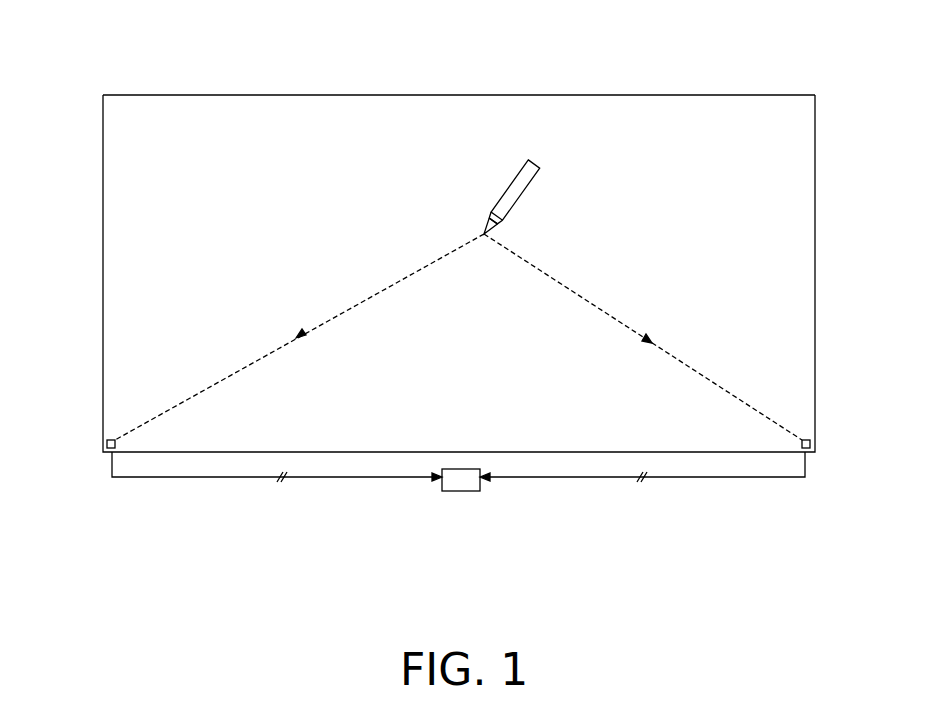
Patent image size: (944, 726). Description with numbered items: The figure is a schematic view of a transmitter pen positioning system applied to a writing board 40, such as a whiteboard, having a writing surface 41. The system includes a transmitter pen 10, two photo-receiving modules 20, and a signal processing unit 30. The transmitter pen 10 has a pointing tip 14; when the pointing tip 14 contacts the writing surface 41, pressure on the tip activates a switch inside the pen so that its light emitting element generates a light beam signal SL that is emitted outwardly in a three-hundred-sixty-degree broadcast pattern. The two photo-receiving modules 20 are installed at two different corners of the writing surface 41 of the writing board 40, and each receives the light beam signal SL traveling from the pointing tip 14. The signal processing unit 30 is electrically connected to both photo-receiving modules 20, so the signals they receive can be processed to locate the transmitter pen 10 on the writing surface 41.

The transmitter pen 10 is at (552, 164).
The pointing tip 14 is at (485, 237).
The photo-receiving module 20 is at (106, 450).
The signal processing unit 30 is at (463, 488).
The writing board 40 is at (741, 82).
The writing surface 41 is at (640, 107).
The light beam signal SL is at (368, 300).